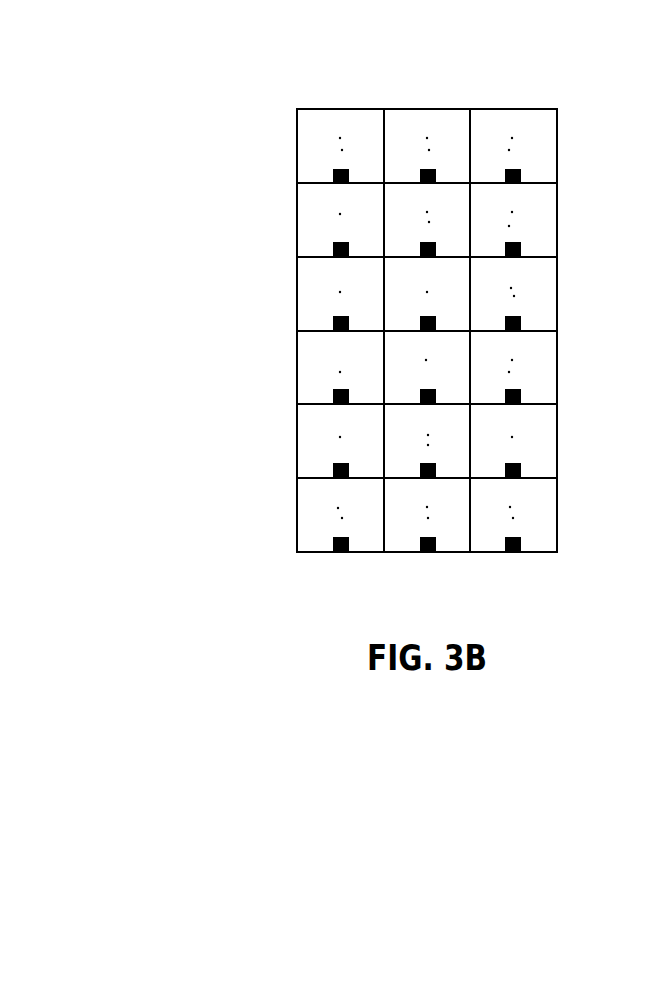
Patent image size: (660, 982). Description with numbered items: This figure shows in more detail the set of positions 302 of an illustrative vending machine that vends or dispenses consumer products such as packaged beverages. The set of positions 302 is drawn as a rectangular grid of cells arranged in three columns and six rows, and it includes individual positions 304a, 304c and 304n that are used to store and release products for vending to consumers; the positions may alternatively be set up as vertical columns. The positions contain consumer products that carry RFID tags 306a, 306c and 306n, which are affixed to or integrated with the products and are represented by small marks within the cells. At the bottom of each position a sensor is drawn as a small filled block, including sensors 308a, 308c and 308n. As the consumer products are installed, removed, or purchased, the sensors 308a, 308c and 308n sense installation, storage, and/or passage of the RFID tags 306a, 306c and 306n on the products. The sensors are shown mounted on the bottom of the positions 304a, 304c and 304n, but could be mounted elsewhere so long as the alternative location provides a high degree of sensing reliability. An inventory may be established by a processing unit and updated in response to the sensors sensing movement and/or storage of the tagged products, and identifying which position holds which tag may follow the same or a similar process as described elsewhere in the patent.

The set of positions 302 is at (433, 109).
The position 304a is at (316, 120).
The position 304c is at (543, 118).
The position 304n is at (543, 498).
The RFID tag 306a is at (337, 148).
The RFID tag 306c is at (513, 148).
The RFID tag 306n is at (518, 518).
The sensor 308a is at (337, 172).
The sensor 308c is at (523, 175).
The sensor 308n is at (515, 552).